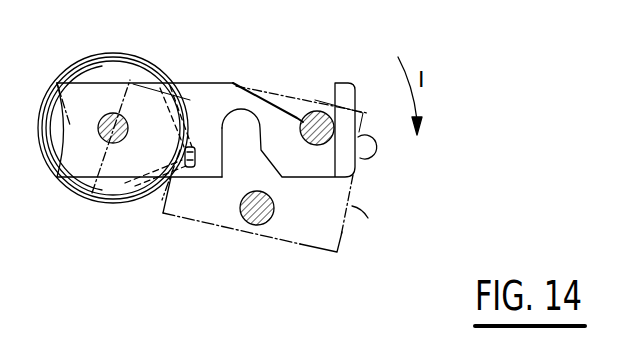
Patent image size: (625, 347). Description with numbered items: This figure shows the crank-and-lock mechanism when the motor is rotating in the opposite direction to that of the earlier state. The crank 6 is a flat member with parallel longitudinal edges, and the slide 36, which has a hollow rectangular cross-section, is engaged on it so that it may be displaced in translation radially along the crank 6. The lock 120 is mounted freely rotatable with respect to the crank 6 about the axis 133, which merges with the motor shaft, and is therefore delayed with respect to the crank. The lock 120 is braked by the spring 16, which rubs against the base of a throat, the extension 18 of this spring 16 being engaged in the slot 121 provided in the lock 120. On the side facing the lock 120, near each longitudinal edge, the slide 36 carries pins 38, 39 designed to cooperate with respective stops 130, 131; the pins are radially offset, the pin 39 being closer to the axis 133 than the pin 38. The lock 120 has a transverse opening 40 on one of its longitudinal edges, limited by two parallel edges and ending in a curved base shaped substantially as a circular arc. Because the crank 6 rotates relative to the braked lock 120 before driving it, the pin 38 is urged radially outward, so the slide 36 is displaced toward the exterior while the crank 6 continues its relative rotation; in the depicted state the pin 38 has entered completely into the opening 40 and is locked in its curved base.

The spring 16 is at (102, 55).
The axis 133 is at (85, 208).
The lock 120 is at (212, 103).
The extension 18 is at (190, 157).
The slot 121 is at (188, 166).
The slide 36 is at (315, 220).
The stop 131 is at (228, 143).
The stop 130 is at (320, 105).
The opening 40 is at (297, 102).
The pin 38 is at (333, 132).
The pin 39 is at (253, 224).
The crank 6 is at (378, 226).